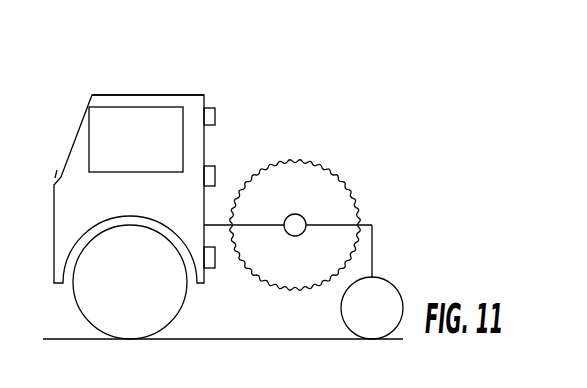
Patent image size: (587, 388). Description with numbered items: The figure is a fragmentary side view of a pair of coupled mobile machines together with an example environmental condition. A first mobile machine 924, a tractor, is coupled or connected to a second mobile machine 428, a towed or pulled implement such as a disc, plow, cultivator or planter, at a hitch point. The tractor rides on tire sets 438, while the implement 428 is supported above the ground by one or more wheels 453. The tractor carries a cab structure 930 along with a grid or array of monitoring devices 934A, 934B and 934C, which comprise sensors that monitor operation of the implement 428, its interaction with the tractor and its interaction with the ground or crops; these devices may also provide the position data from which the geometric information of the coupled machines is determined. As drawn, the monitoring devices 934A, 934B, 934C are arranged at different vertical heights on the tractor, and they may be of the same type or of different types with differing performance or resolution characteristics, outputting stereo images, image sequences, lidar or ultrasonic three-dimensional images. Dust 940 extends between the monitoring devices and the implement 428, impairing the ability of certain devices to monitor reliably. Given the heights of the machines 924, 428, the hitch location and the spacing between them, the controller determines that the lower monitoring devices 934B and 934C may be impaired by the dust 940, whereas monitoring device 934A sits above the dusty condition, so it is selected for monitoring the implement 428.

The mobile machine 924 is at (136, 60).
The cab 930 is at (171, 95).
The monitoring device 934A is at (216, 116).
The monitoring device 934B is at (216, 174).
The monitoring device 934C is at (215, 262).
The dust 940 is at (303, 158).
The mobile machine 428 is at (393, 138).
The tire sets 438 is at (177, 318).
The wheels 453 is at (345, 313).